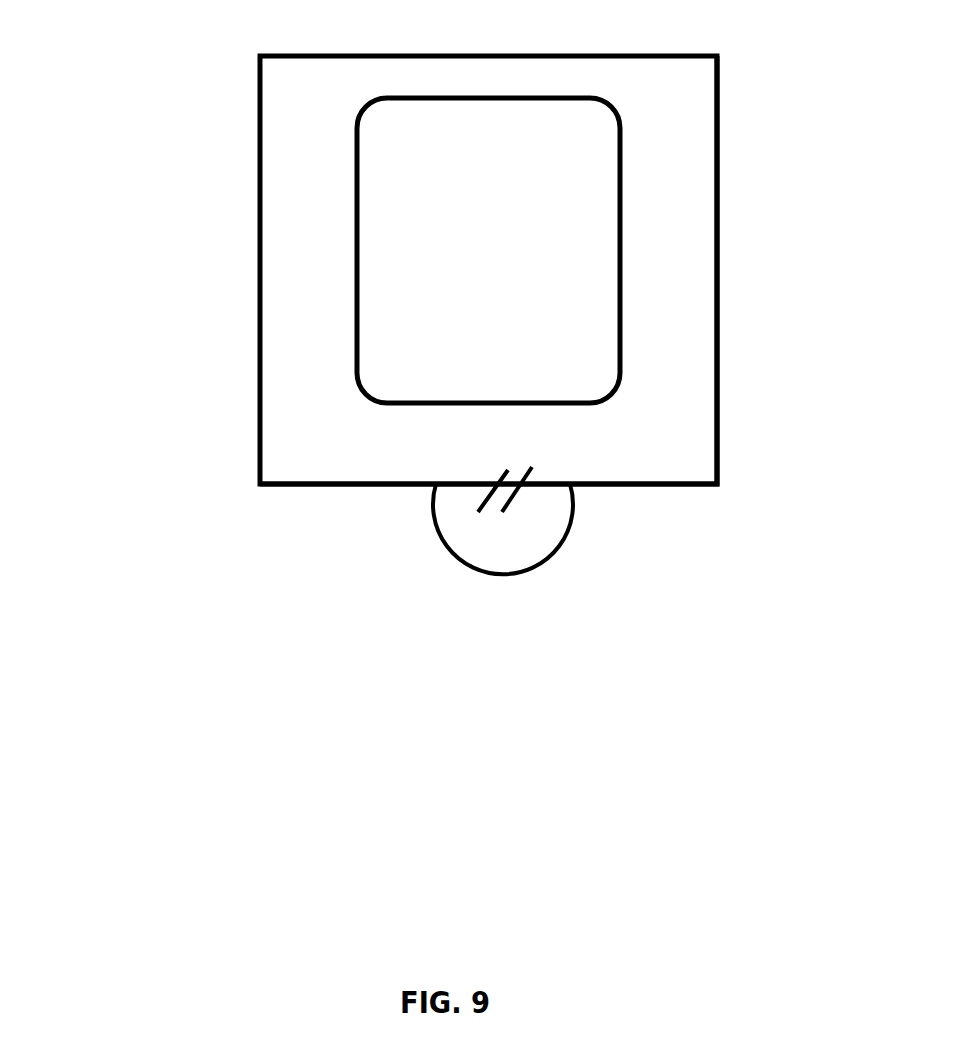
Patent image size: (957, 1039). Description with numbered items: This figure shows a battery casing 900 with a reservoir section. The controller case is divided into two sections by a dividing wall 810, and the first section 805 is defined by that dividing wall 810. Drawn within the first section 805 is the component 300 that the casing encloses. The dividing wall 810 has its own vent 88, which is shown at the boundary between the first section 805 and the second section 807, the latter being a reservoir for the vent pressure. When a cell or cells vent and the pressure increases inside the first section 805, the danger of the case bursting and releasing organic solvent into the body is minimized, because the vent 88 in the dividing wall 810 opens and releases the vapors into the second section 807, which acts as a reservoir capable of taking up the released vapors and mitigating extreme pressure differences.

The system 900 is at (126, 110).
The first section 805 is at (703, 170).
The dividing wall 810 is at (717, 405).
The device 300 is at (488, 250).
The second section 807 is at (465, 533).
The vent 88 is at (517, 490).